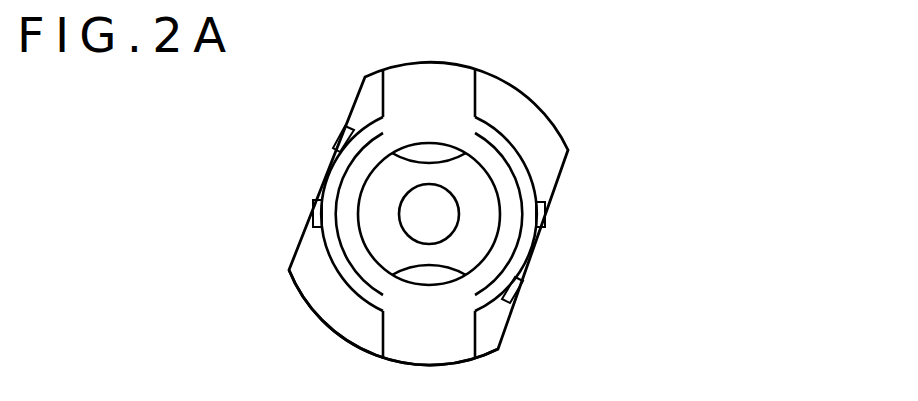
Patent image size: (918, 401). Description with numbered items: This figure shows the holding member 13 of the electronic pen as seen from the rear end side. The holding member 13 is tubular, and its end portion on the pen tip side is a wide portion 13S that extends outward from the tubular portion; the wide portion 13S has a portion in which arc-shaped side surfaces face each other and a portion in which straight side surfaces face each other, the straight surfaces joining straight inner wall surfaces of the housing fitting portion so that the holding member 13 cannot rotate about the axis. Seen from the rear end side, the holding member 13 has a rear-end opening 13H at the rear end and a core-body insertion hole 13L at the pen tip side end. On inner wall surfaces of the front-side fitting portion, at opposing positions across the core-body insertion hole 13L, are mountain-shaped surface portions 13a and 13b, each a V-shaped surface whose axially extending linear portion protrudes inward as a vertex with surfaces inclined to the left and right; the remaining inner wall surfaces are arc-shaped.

The holding member 13 is at (546, 44).
The rear-end opening 13H is at (468, 241).
The core-body insertion hole 13L is at (458, 203).
The mountain-shaped surface portion 13a is at (395, 160).
The mountain-shaped surface portion 13b is at (393, 272).
The wide portion 13S is at (330, 315).